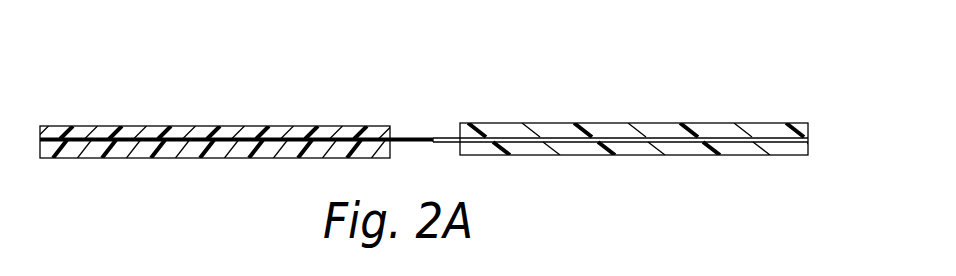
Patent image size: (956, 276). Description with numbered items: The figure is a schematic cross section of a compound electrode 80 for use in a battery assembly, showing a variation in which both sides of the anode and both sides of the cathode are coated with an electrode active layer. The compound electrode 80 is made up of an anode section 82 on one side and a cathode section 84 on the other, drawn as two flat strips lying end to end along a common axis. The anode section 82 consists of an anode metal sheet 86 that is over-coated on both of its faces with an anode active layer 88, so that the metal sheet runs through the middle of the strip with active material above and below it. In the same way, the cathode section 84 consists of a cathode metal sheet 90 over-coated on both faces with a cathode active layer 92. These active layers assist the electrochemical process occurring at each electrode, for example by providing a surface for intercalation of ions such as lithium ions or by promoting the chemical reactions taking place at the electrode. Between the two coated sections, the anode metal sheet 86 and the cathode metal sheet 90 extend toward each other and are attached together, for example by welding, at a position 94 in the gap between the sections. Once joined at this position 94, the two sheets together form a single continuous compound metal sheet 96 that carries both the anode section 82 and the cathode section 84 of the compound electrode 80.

The compound electrode 80 is at (778, 56).
The anode section 82 is at (107, 117).
The cathode section 84 is at (605, 112).
The anode metal sheet 86 is at (90, 141).
The anode active layer 88 is at (230, 126).
The cathode metal sheet 90 is at (534, 143).
The cathode active layer 92 is at (531, 123).
The position 94 is at (433, 137).
The compound metal sheet 96 is at (446, 117).